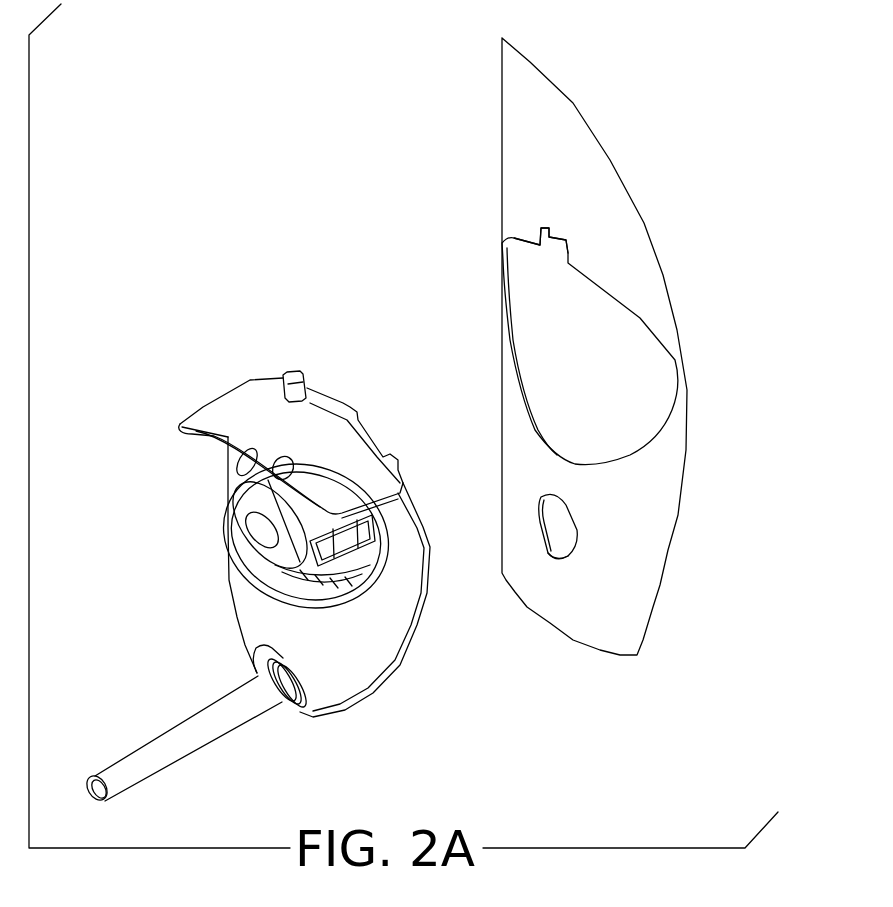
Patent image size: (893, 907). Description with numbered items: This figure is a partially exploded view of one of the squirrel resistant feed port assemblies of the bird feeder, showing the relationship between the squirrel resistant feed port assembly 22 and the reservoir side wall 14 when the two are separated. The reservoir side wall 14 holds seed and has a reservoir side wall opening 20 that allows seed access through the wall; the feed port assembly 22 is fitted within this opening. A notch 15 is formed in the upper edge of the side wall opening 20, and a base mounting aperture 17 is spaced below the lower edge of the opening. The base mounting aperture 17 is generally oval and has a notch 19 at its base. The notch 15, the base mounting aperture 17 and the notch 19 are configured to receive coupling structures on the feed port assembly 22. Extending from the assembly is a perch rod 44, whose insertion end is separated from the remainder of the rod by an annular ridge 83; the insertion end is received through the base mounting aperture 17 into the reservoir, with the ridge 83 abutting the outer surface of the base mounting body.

The reservoir side wall 14 is at (583, 143).
The notch 15 is at (568, 243).
The reservoir side wall opening 20 is at (660, 343).
The base mounting aperture 17 is at (574, 525).
The notch 19 is at (565, 557).
The squirrel resistant feed port assembly 22 is at (256, 539).
The ridge 83 is at (260, 645).
The perch rod 44 is at (146, 754).